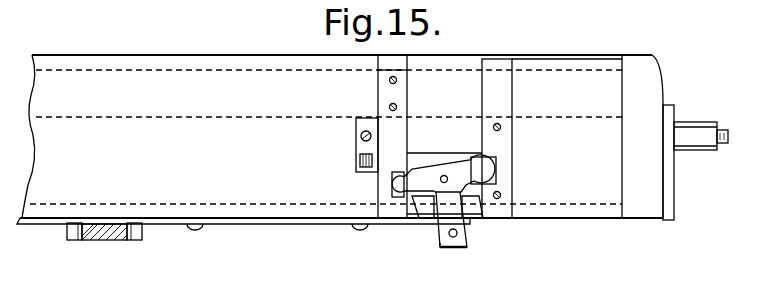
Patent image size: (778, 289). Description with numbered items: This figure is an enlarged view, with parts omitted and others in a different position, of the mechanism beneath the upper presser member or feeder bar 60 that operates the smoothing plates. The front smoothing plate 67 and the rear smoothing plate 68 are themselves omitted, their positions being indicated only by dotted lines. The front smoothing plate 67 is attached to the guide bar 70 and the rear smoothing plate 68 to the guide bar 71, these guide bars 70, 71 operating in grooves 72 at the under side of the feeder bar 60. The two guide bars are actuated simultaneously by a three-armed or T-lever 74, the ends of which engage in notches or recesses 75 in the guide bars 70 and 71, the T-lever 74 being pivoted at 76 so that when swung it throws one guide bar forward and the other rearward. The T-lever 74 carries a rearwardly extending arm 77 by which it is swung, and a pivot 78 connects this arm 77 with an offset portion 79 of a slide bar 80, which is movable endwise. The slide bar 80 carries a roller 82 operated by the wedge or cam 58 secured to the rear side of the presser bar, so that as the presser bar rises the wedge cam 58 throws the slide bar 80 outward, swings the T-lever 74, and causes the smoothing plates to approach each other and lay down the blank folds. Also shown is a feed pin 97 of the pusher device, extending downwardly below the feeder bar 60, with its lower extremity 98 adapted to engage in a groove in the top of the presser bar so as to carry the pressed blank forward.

The wedge or cam 58 is at (110, 241).
The feeder bar 60 is at (322, 136).
The front smoothing plate 67 is at (209, 68).
The rear smoothing plate 68 is at (168, 206).
The guide bar 70 is at (392, 88).
The guide bar 71 is at (498, 141).
The groove 72 is at (395, 62).
The T-lever 74 is at (432, 183).
The notch or recess 75 is at (397, 194).
The pivot 76 is at (445, 177).
The rearwardly extending arm 77 is at (469, 245).
The pivot 78 is at (453, 238).
The offset portion 79 is at (438, 244).
The slide bar 80 is at (250, 225).
The roller 82 is at (72, 239).
The feed pin 97 is at (360, 154).
The lower extremity 98 is at (360, 162).